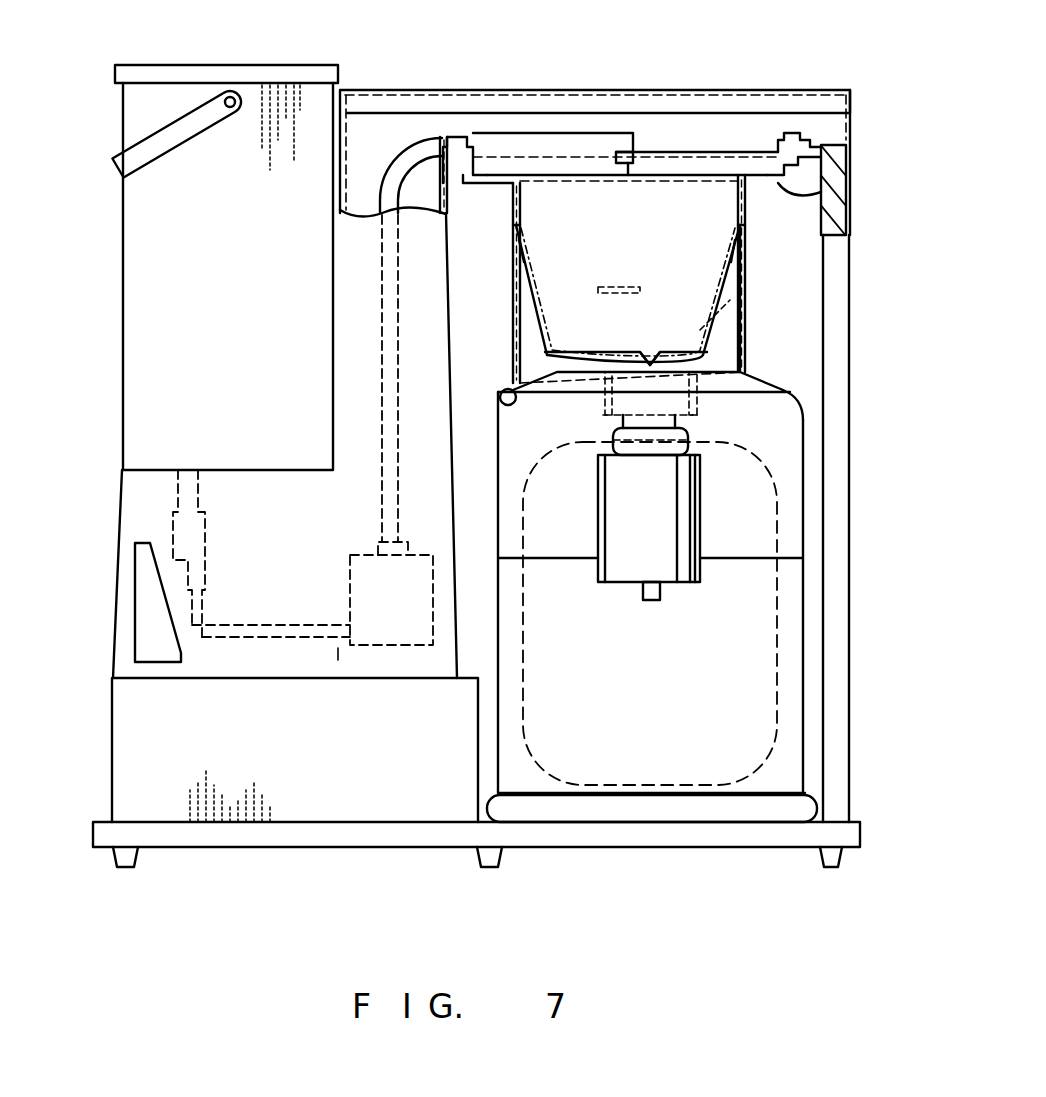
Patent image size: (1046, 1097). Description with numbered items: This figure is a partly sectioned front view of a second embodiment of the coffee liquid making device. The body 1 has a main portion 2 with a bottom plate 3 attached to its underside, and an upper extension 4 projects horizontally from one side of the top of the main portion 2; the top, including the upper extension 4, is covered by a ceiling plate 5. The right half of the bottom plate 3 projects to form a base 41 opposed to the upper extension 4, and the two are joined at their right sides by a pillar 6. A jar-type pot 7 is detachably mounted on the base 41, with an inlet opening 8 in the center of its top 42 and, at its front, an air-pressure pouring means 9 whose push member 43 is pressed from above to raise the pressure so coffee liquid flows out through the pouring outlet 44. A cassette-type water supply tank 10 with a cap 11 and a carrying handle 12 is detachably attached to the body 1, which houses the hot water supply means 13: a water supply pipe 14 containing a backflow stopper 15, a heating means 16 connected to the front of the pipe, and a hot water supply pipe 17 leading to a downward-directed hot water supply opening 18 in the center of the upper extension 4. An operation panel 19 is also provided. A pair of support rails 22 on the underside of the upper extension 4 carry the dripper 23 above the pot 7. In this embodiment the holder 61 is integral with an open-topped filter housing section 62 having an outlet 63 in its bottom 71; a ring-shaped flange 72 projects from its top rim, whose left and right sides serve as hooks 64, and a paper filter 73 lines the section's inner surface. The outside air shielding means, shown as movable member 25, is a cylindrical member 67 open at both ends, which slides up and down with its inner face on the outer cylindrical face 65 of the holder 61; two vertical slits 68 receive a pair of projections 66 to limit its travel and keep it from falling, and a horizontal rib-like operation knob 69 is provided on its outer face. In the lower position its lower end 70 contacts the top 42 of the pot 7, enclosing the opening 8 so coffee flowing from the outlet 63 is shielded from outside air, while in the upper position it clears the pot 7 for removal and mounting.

The body 1 is at (102, 674).
The main portion 2 is at (448, 441).
The bottom plate 3 is at (313, 848).
The upper extension 4 is at (849, 135).
The ceiling plate 5 is at (672, 90).
The pillar 6 is at (838, 642).
The pot 7 is at (790, 512).
The inlet opening 8 is at (604, 401).
The pouring means 9 is at (612, 527).
The water supply tank 10 is at (140, 304).
The cap 11 is at (248, 65).
The handle 12 is at (160, 146).
The hot water supply means 13 is at (343, 660).
The water supply pipe 14 is at (282, 628).
The backflow stopper 15 is at (195, 538).
The heating means 16 is at (386, 632).
The hot water supply pipe 17 is at (412, 138).
The hot water supply opening 18 is at (630, 166).
The operation panel 19 is at (142, 606).
The support rails 22 is at (846, 190).
The dripper 23 is at (762, 301).
The movable member 25 is at (520, 318).
The base 41 is at (722, 824).
The top 42 is at (764, 380).
The push member 43 is at (651, 455).
The pouring outlet 44 is at (662, 596).
The holder 61 is at (560, 190).
The filter housing section 62 is at (730, 326).
The outlet 63 is at (652, 358).
The hooks 64 is at (490, 160).
The outer cylindrical face 65 is at (513, 200).
The projections 66 is at (516, 230).
The cylindrical member 67 is at (514, 354).
The slits 68 is at (517, 262).
The operation knob 69 is at (612, 290).
The lower end 70 is at (500, 398).
The bottom 71 is at (568, 350).
The flange 72 is at (664, 175).
The paper filter 73 is at (712, 332).